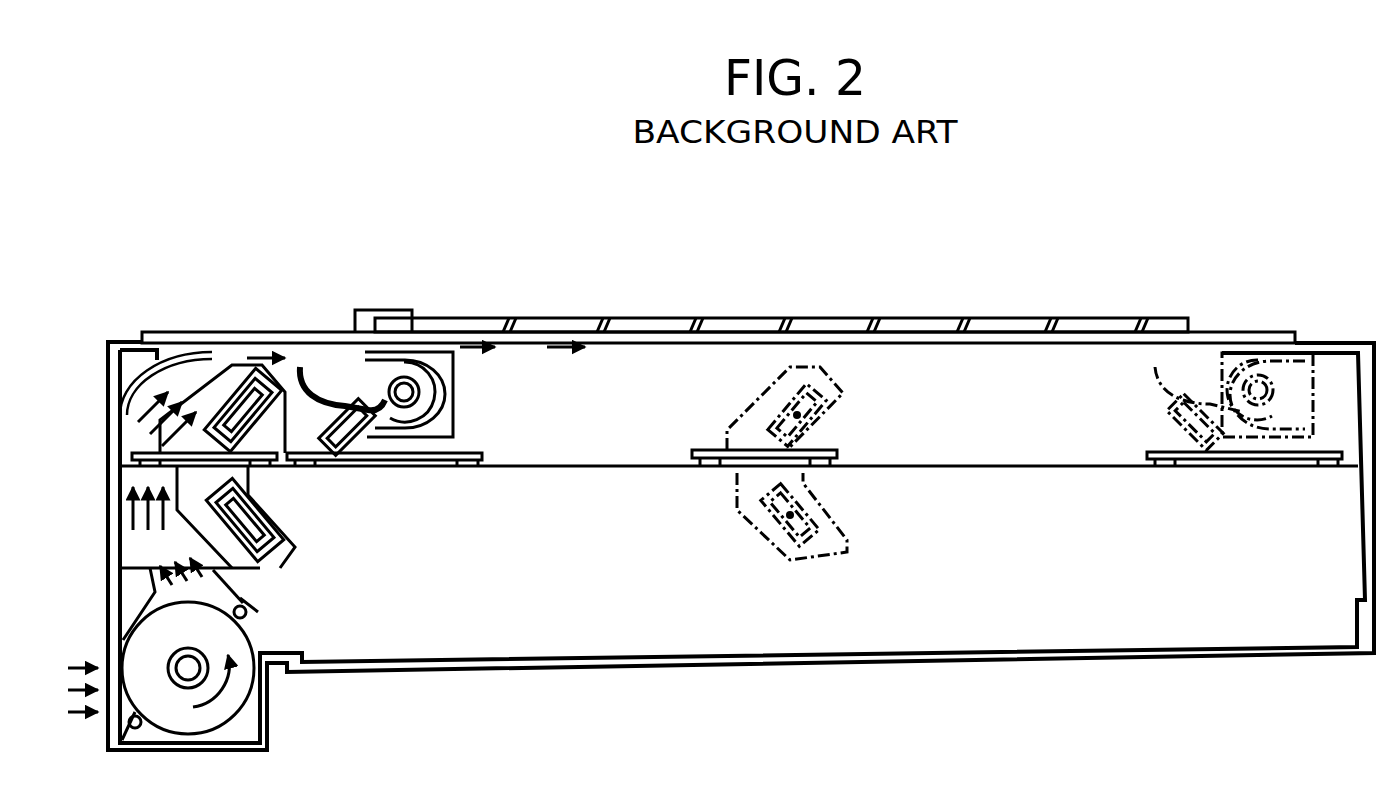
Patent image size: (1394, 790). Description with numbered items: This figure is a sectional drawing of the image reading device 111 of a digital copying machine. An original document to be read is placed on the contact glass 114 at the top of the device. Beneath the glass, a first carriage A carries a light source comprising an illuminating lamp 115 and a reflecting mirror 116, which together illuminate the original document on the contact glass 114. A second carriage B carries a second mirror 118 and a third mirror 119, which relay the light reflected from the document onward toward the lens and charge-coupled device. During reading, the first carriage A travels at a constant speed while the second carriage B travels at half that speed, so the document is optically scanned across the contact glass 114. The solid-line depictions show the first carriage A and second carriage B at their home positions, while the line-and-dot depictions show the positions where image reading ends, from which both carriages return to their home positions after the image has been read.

The image reading device 111 is at (791, 289).
The contact glass 114 is at (470, 318).
The illuminating lamp 115 is at (388, 386).
The reflecting mirror 116 is at (453, 410).
The second mirror 118 is at (226, 398).
The third mirror 119 is at (275, 570).
The first carriage A is at (412, 457).
The second carriage B is at (283, 528).